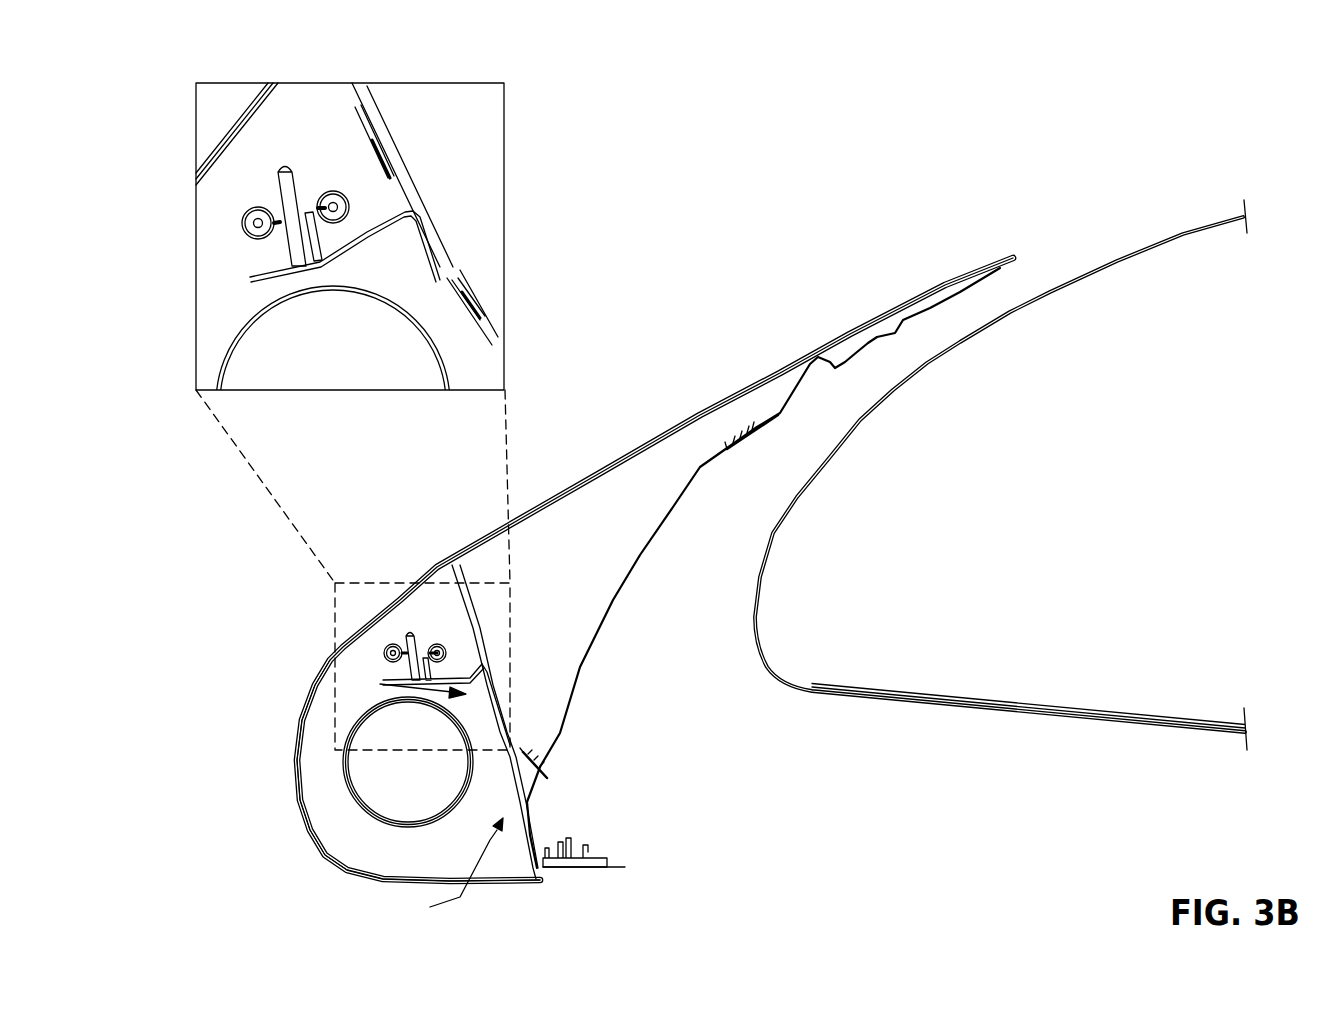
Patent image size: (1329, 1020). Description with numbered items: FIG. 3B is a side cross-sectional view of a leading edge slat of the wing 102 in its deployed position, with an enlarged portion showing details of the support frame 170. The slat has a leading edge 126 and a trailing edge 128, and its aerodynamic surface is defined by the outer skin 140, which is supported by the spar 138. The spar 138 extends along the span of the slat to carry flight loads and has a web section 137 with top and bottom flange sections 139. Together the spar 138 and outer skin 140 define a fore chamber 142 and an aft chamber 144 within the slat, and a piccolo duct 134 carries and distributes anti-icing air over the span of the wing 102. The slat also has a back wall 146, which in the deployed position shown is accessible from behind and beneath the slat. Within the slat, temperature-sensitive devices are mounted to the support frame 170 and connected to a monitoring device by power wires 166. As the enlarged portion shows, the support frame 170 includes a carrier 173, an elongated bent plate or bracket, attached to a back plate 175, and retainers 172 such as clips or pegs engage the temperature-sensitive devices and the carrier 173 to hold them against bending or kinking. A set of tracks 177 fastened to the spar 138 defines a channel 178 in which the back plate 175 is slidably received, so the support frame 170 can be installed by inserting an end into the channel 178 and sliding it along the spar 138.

The wing 102 is at (1085, 692).
The leading edge 126 is at (307, 833).
The trailing edge 128 is at (625, 867).
The piccolo duct 134 is at (378, 805).
The web section 137 is at (477, 627).
The spar 138 is at (438, 871).
The flange sections 139 is at (542, 876).
The outer skin 140 is at (317, 813).
The fore chamber 142 is at (323, 762).
The aft chamber 144 is at (907, 350).
The back wall 146 is at (540, 765).
The power wires 166 is at (430, 650).
The support frame 170 is at (390, 687).
The retainers 172 is at (412, 636).
The carrier 173 is at (444, 645).
The back plate 175 is at (480, 660).
The tracks 177 is at (493, 720).
The channel 178 is at (390, 160).